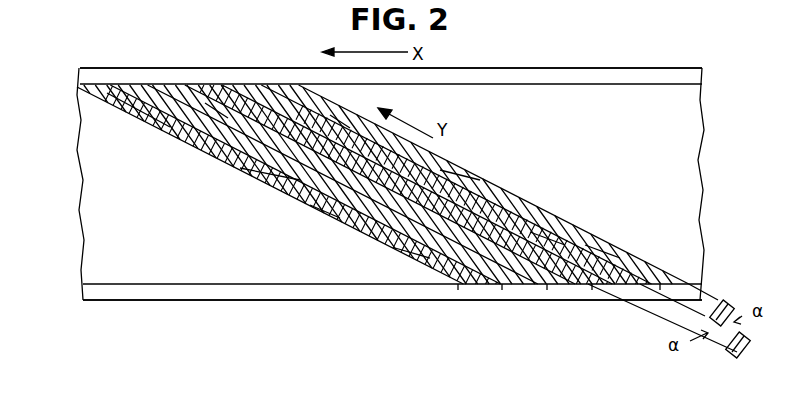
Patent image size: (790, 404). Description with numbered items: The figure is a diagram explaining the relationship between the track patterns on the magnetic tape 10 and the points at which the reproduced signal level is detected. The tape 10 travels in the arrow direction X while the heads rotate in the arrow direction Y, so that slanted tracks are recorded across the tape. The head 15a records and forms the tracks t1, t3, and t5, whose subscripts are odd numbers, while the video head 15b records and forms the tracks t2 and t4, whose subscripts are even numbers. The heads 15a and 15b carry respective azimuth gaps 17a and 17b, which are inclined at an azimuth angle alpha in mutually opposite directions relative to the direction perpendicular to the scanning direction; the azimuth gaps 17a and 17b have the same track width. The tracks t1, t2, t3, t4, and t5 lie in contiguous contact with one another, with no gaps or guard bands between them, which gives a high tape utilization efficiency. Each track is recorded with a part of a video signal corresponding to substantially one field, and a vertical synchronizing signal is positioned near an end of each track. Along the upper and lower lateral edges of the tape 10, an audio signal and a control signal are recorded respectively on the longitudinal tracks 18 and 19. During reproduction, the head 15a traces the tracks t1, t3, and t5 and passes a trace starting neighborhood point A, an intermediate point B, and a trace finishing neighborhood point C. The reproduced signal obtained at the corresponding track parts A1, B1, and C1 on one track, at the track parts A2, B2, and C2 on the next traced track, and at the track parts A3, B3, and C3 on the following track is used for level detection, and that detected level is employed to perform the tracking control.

The tape 10 is at (688, 166).
The track 18 is at (566, 68).
The track 19 is at (347, 296).
The head 15a is at (719, 300).
The video head 15b is at (722, 350).
The azimuth gap 17a is at (730, 307).
The azimuth gap 17b is at (742, 355).
The track part A1 is at (412, 250).
The track part A2 is at (550, 232).
The track part A3 is at (600, 250).
The track part B1 is at (258, 180).
The track part B2 is at (328, 215).
The track part B3 is at (468, 175).
The track part C1 is at (145, 117).
The track part C2 is at (237, 107).
The track part C3 is at (338, 118).
The track t1 is at (465, 275).
The track t2 is at (508, 275).
The track t3 is at (552, 275).
The track t4 is at (597, 275).
The track t5 is at (652, 280).